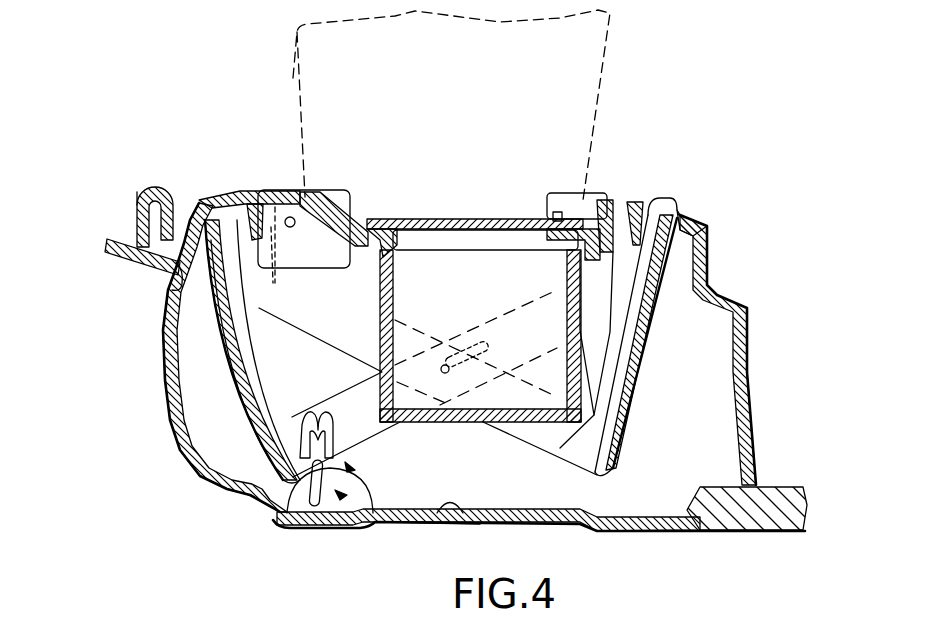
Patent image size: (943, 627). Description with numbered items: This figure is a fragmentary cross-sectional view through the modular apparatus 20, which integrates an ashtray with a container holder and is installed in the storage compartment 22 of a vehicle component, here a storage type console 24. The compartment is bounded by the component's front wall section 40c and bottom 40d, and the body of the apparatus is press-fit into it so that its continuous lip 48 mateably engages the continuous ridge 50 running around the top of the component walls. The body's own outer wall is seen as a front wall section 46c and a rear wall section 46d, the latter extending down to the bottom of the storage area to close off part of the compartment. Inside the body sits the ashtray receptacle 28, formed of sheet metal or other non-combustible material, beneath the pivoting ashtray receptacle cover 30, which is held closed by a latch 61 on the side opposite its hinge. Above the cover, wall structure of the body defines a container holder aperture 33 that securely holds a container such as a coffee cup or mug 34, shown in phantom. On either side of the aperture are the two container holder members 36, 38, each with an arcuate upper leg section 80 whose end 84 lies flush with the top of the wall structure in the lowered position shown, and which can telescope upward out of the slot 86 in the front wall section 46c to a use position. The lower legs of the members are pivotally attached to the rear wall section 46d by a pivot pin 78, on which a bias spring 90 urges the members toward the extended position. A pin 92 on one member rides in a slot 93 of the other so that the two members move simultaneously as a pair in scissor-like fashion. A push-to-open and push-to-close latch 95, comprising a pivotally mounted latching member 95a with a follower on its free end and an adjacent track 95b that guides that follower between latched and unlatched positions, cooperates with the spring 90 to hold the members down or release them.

The modular apparatus 20 is at (752, 153).
The storage compartment 22 is at (642, 490).
The storage type console 24 is at (653, 530).
The ashtray receptacle 28 is at (457, 425).
The ashtray receptacle cover 30 is at (480, 218).
The container holder aperture 33 is at (413, 197).
The mug 34 is at (294, 78).
The container holder member 36 is at (640, 437).
The container holder member 38 is at (218, 408).
The front wall section 40c is at (160, 312).
The bottom 40d is at (427, 527).
The front wall section 46c is at (192, 210).
The rear wall section 46d is at (755, 333).
The continuous lip 48 is at (160, 265).
The continuous ridge 50 is at (185, 285).
The latch 61 is at (560, 200).
The pivot pin 78 is at (310, 193).
The upper leg section 80 is at (645, 350).
The end of upper leg section 84 is at (222, 198).
The slot 86 is at (682, 212).
The bias spring 90 is at (260, 200).
The pin 92 is at (443, 364).
The slot 93 is at (477, 355).
The push-to-open and push-to-close latch 95 is at (360, 527).
The latching member 95a is at (277, 523).
The track 95b is at (220, 483).